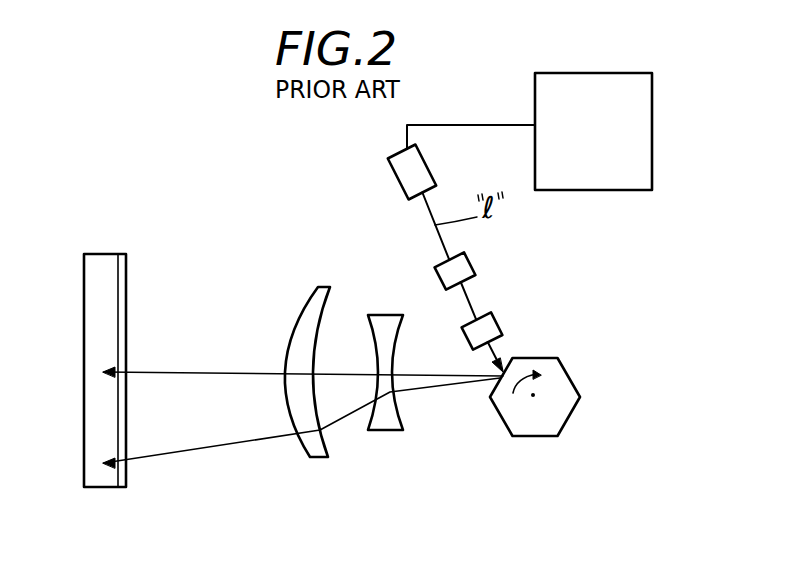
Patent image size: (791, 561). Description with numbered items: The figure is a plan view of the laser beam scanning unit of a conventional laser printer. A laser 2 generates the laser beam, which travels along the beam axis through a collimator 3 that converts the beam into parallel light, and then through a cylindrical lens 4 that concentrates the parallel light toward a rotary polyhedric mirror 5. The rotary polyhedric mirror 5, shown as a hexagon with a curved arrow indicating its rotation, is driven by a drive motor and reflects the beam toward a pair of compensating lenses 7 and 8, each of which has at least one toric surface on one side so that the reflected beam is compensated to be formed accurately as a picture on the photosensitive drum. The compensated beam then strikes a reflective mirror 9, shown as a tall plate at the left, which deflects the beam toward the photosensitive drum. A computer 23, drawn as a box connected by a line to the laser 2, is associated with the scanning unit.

The laser 2 is at (388, 166).
The collimator 3 is at (476, 271).
The cylindrical lens 4 is at (504, 331).
The rotary polyhedric mirror 5 is at (527, 430).
The compensating lens 7 is at (382, 432).
The compensating lens 8 is at (308, 458).
The reflective mirror 9 is at (86, 330).
The computer 23 is at (652, 139).